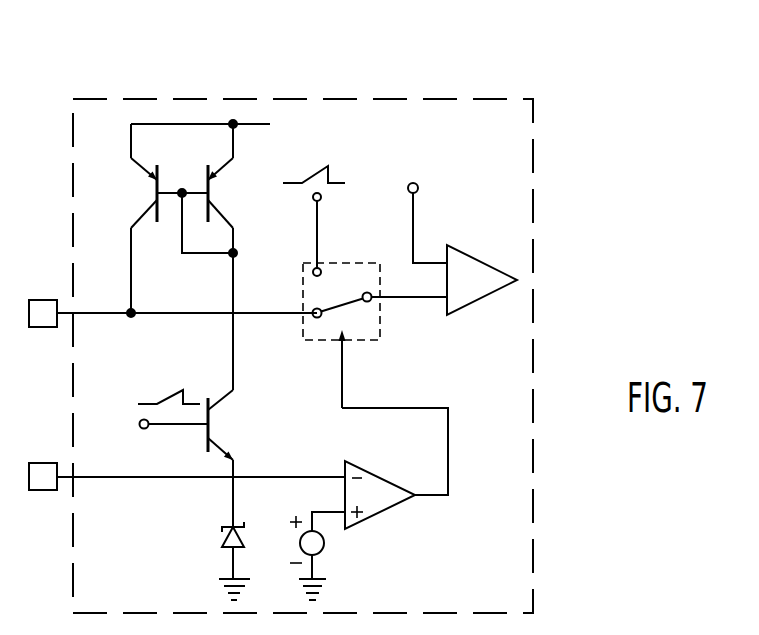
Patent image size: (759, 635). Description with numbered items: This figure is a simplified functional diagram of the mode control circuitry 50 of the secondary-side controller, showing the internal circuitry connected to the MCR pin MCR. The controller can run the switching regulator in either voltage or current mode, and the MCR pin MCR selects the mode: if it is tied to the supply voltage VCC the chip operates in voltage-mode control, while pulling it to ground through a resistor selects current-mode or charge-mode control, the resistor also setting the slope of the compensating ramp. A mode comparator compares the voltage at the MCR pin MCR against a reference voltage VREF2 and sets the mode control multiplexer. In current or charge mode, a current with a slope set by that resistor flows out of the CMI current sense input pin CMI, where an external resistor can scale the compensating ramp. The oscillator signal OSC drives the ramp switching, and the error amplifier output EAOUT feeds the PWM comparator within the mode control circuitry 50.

The mode control circuitry 50 is at (212, 96).
The supply voltage VCC is at (221, 124).
The CMI current sense input pin CMI is at (172, 300).
The MCR pin MCR is at (185, 464).
The oscillator OSC is at (307, 217).
The error amplifier output EAOUT is at (446, 219).
The reference voltage VREF2 is at (338, 539).